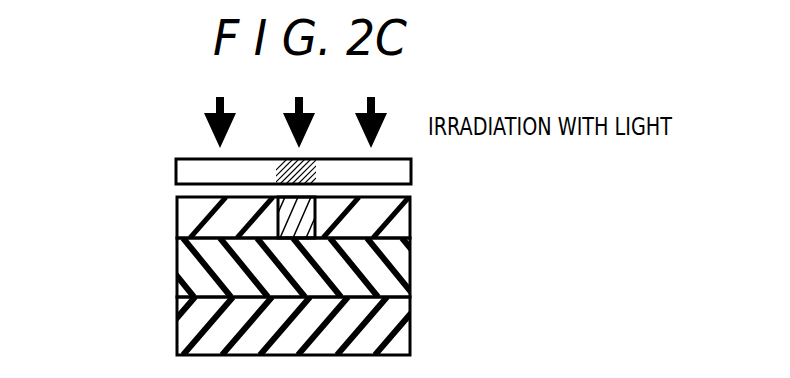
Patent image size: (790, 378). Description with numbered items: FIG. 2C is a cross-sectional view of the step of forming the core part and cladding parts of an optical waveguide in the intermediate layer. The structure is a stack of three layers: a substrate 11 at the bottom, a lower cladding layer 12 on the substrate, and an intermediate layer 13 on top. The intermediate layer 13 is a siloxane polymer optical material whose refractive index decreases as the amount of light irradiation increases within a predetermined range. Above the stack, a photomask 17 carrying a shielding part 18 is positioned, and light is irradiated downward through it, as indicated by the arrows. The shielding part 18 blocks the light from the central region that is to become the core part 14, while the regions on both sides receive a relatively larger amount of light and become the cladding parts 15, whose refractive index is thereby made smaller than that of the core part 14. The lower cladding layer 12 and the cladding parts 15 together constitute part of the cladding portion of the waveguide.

The substrate 11 is at (395, 325).
The lower cladding layer 12 is at (395, 270).
The intermediate layer 13 is at (262, 233).
The core part 14 is at (282, 224).
The cladding part 15 is at (395, 222).
The photomask 17 is at (397, 171).
The shielding part 18 is at (292, 158).